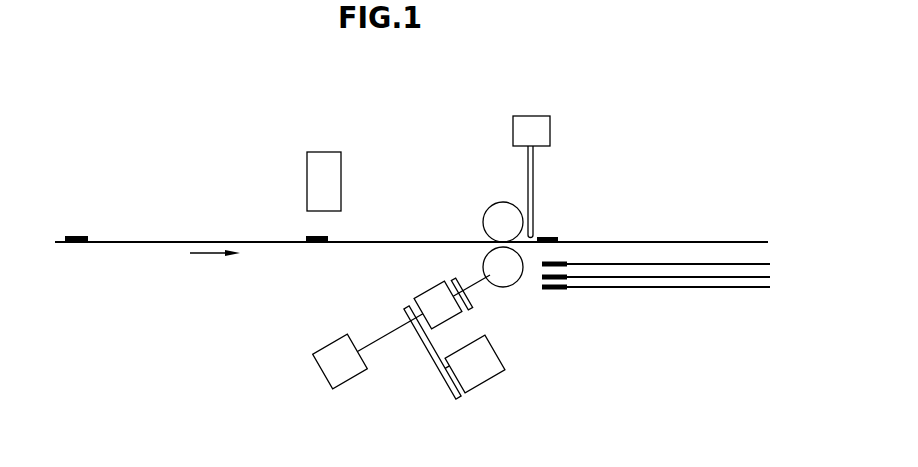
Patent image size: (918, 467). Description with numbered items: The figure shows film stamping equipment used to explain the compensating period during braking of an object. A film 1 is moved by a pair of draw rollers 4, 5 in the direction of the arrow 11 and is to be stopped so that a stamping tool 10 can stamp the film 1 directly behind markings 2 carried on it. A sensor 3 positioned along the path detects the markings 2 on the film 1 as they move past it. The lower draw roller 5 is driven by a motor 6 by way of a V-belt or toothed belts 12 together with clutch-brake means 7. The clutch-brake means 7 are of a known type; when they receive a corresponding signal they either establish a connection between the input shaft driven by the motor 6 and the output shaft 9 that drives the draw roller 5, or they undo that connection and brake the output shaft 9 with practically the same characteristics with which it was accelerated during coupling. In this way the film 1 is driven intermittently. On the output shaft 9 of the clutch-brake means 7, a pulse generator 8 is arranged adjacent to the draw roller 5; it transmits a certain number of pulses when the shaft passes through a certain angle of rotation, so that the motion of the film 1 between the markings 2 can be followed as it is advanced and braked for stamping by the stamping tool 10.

The film 1 is at (135, 243).
The markings 2 is at (73, 234).
The sensor 3 is at (327, 175).
The draw roller 4 is at (503, 225).
The draw roller 5 is at (510, 278).
The motor 6 is at (477, 370).
The clutch-brake means 7 is at (435, 301).
The pulse generator 8 is at (332, 369).
The output shaft 9 is at (385, 342).
The stamping tool 10 is at (535, 128).
The arrow 11 is at (220, 255).
The V-belt or toothed belts 12 is at (437, 365).